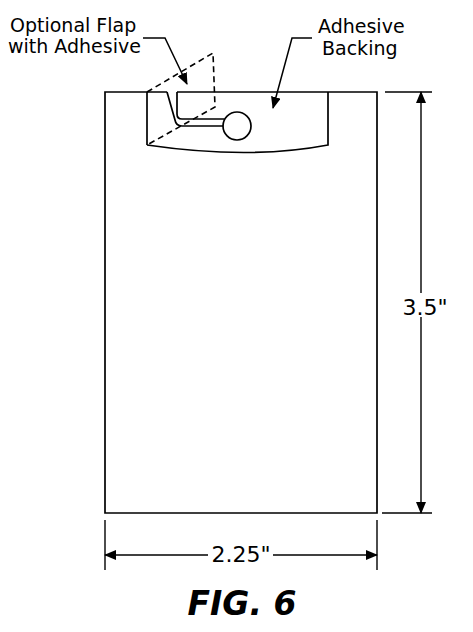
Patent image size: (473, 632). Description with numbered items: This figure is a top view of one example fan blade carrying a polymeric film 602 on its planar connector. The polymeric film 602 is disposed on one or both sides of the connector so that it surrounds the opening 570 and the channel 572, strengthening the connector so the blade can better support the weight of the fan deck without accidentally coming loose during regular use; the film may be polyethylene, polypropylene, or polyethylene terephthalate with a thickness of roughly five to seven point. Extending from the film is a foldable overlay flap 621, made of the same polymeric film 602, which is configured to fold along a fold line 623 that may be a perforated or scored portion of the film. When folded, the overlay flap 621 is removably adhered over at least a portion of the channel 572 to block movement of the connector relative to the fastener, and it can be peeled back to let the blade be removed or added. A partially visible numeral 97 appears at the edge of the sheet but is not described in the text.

The polymeric film 602 is at (303, 108).
The foldable overlay flap 621 is at (194, 63).
The fold line 623 is at (146, 143).
The channel 572 is at (195, 128).
The opening 570 is at (237, 132).
The truncated reference numeral 97 is at (6, 225).